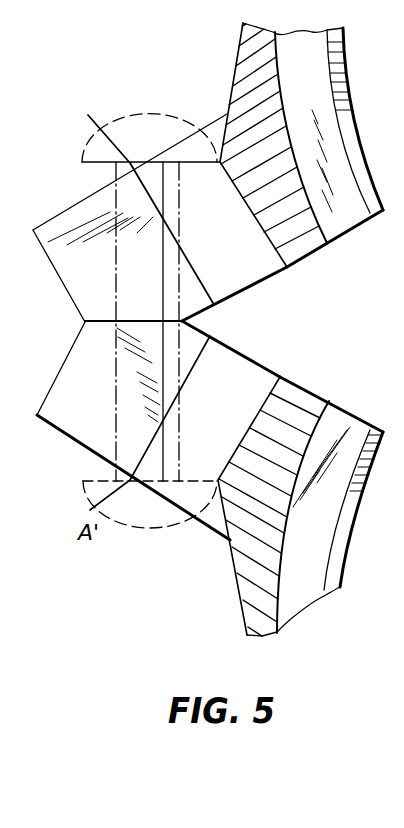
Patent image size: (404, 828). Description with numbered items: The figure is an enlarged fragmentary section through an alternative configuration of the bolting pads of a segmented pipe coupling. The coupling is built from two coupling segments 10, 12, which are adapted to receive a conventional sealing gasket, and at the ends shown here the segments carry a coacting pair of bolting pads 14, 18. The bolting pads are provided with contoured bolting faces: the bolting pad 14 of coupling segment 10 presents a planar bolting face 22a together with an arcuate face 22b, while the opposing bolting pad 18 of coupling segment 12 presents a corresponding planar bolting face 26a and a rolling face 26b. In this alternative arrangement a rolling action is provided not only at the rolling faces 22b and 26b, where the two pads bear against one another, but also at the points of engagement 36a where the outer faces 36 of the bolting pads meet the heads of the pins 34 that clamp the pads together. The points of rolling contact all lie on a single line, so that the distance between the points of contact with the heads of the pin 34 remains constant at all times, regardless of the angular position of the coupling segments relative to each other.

The coupling segment 10 is at (237, 65).
The coupling segment 12 is at (236, 571).
The bolting pad 14 is at (72, 267).
The bolting pad 18 is at (78, 370).
The planar bolting face 22a is at (284, 270).
The arcuate face 22b is at (217, 313).
The planar bolting face 26a is at (285, 368).
The rolling face 26b is at (203, 327).
The pin 34 is at (160, 120).
The outer face 36 is at (73, 208).
The point of engagement 36a is at (137, 199).